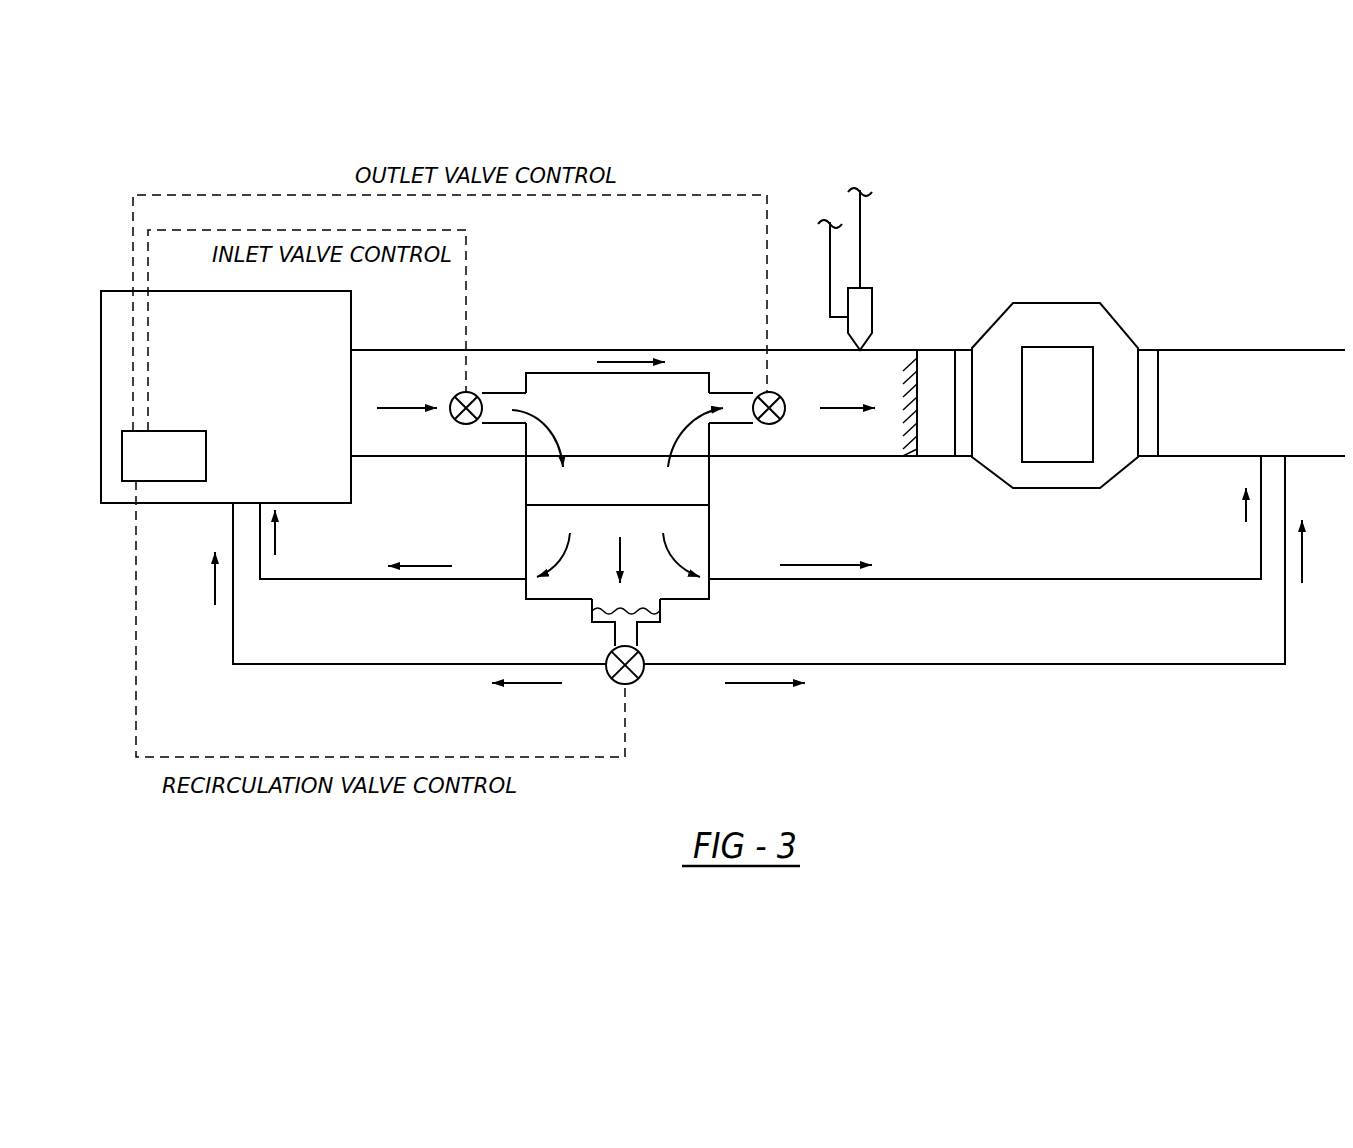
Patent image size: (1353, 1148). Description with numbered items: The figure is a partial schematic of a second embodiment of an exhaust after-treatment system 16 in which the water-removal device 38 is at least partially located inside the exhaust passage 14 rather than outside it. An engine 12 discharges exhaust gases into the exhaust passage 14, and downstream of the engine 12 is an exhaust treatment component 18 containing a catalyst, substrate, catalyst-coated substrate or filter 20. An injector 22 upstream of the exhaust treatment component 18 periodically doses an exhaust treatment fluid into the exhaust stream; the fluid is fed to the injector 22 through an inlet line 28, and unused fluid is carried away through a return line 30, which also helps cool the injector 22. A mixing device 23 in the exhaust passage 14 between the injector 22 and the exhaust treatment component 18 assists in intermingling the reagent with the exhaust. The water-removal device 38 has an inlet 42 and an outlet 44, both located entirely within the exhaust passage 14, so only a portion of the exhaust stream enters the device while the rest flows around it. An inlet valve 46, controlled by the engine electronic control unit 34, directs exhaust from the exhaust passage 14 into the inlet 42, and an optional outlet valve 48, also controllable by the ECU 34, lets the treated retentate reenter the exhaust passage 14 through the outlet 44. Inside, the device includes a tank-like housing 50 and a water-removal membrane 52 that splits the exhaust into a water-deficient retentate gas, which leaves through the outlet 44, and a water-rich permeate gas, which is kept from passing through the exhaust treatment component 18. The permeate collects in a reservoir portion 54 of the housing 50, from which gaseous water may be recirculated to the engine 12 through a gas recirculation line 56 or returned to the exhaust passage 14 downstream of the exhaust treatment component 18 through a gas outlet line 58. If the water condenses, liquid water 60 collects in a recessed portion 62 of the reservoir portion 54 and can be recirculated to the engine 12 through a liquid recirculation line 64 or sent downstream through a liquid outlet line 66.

The engine 12 is at (246, 420).
The exhaust passage 14 is at (437, 349).
The exhaust after-treatment system 16 is at (958, 758).
The exhaust treatment component 18 is at (1066, 304).
The catalyst, substrate, catalyst-coated substrate or filter 20 is at (1043, 417).
The injector 22 is at (875, 317).
The mixing device 23 is at (918, 397).
The inlet line 28 is at (860, 232).
The return line 30 is at (828, 276).
The engine electronic control unit (ECU) 34 is at (148, 469).
The water-removal device 38 is at (683, 373).
The inlet 42 is at (503, 393).
The outlet 44 is at (742, 393).
The inlet valve 46 is at (455, 424).
The outlet valve 48 is at (786, 422).
The housing 50 is at (712, 522).
The water-removal membrane 52 is at (611, 505).
The reservoir portion 54 is at (692, 600).
The gas recirculation line 56 is at (346, 580).
The gas outlet line 58 is at (907, 581).
The liquid water 60 is at (647, 617).
The recessed portion 62 is at (598, 624).
The liquid recirculation line 64 is at (400, 663).
The liquid outlet line 66 is at (1118, 664).